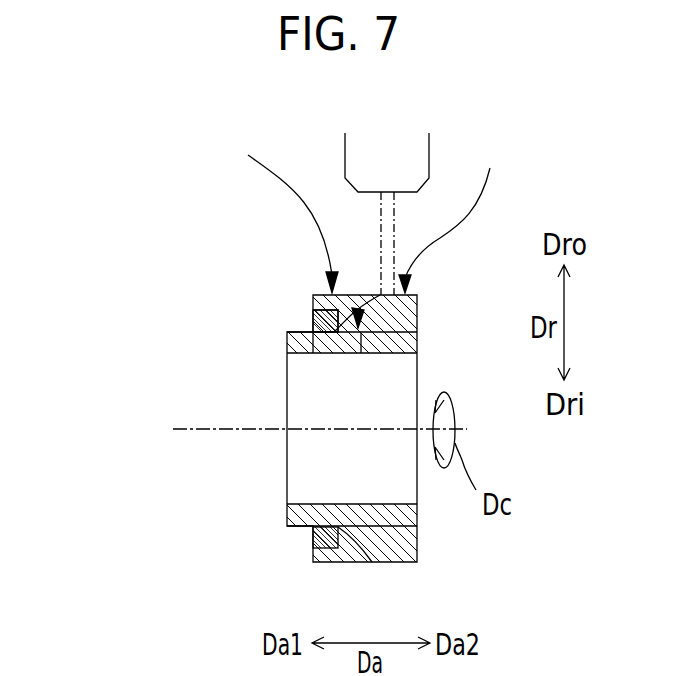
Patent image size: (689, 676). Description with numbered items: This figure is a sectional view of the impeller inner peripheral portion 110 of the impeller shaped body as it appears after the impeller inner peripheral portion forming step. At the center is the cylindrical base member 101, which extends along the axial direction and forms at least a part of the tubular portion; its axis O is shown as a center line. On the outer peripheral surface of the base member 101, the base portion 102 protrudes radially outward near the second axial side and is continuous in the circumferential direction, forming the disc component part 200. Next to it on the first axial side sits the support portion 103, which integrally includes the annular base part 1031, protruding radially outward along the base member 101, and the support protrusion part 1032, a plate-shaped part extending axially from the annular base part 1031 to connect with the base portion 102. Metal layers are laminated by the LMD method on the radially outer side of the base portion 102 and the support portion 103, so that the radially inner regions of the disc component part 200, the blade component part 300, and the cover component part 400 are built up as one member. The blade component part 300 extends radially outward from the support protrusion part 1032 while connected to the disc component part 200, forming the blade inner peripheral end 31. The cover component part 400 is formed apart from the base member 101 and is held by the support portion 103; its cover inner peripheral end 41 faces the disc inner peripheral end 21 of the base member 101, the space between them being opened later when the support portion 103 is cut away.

The disc component part 200 is at (436, 214).
The cover component part 400 is at (269, 211).
The blade inner peripheral end 31 is at (358, 305).
The cover inner peripheral end 41 is at (335, 312).
The support portion 103 is at (88, 222).
The support protrusion part 1032 is at (313, 308).
The annular base part 1031 is at (313, 325).
The base portion 102 is at (417, 315).
The blade component part 300 is at (361, 333).
The disc inner peripheral end 21 is at (287, 345).
The base member 101 is at (287, 373).
The impeller inner peripheral portion 110 is at (287, 522).
The central axis O is at (233, 430).